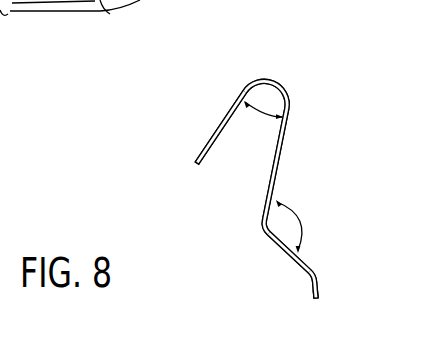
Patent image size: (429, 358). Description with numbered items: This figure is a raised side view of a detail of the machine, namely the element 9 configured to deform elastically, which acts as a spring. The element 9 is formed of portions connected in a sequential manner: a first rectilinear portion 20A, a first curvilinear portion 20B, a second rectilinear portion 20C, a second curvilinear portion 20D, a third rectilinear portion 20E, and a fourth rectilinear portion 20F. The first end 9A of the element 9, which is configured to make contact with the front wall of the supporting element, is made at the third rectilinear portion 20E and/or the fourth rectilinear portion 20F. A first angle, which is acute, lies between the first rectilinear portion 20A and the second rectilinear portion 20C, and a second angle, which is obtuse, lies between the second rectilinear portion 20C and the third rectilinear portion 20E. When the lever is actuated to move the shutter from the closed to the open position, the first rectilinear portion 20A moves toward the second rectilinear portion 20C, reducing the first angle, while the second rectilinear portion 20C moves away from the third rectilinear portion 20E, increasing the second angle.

The element configured to deform elastically 9 is at (303, 125).
The first end 9A is at (340, 275).
The first rectilinear portion 20A is at (193, 140).
The first curvilinear portion 20B is at (266, 70).
The second rectilinear portion 20C is at (256, 175).
The second curvilinear portion 20D is at (250, 234).
The third rectilinear portion 20E is at (314, 248).
The fourth rectilinear portion 20F is at (304, 303).